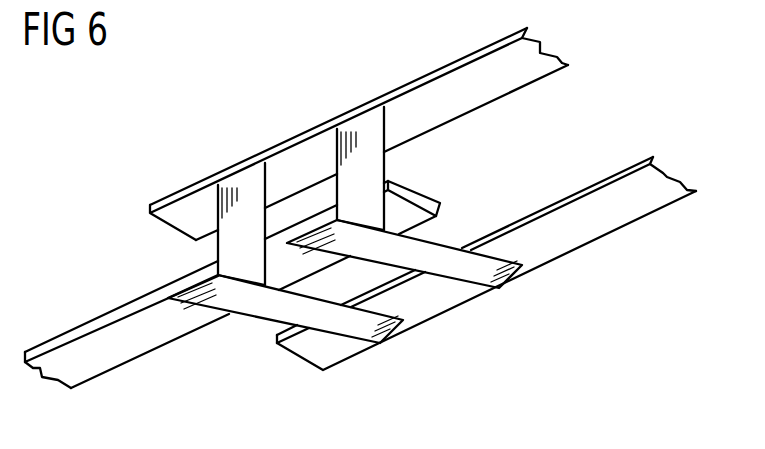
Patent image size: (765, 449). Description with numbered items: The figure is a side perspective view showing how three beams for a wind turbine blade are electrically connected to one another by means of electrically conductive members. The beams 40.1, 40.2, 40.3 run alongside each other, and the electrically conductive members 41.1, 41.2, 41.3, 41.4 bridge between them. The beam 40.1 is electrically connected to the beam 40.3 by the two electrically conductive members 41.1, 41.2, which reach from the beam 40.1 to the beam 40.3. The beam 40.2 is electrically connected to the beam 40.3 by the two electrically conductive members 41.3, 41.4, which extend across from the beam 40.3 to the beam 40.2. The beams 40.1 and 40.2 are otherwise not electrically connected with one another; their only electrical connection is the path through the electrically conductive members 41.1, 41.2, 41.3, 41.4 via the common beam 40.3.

The beam 40.1 is at (450, 82).
The beam 40.2 is at (617, 218).
The beam 40.3 is at (145, 358).
The electrically conductive member 41.1 is at (362, 130).
The electrically conductive member 41.2 is at (248, 177).
The electrically conductive member 41.3 is at (487, 280).
The electrically conductive member 41.4 is at (353, 327).